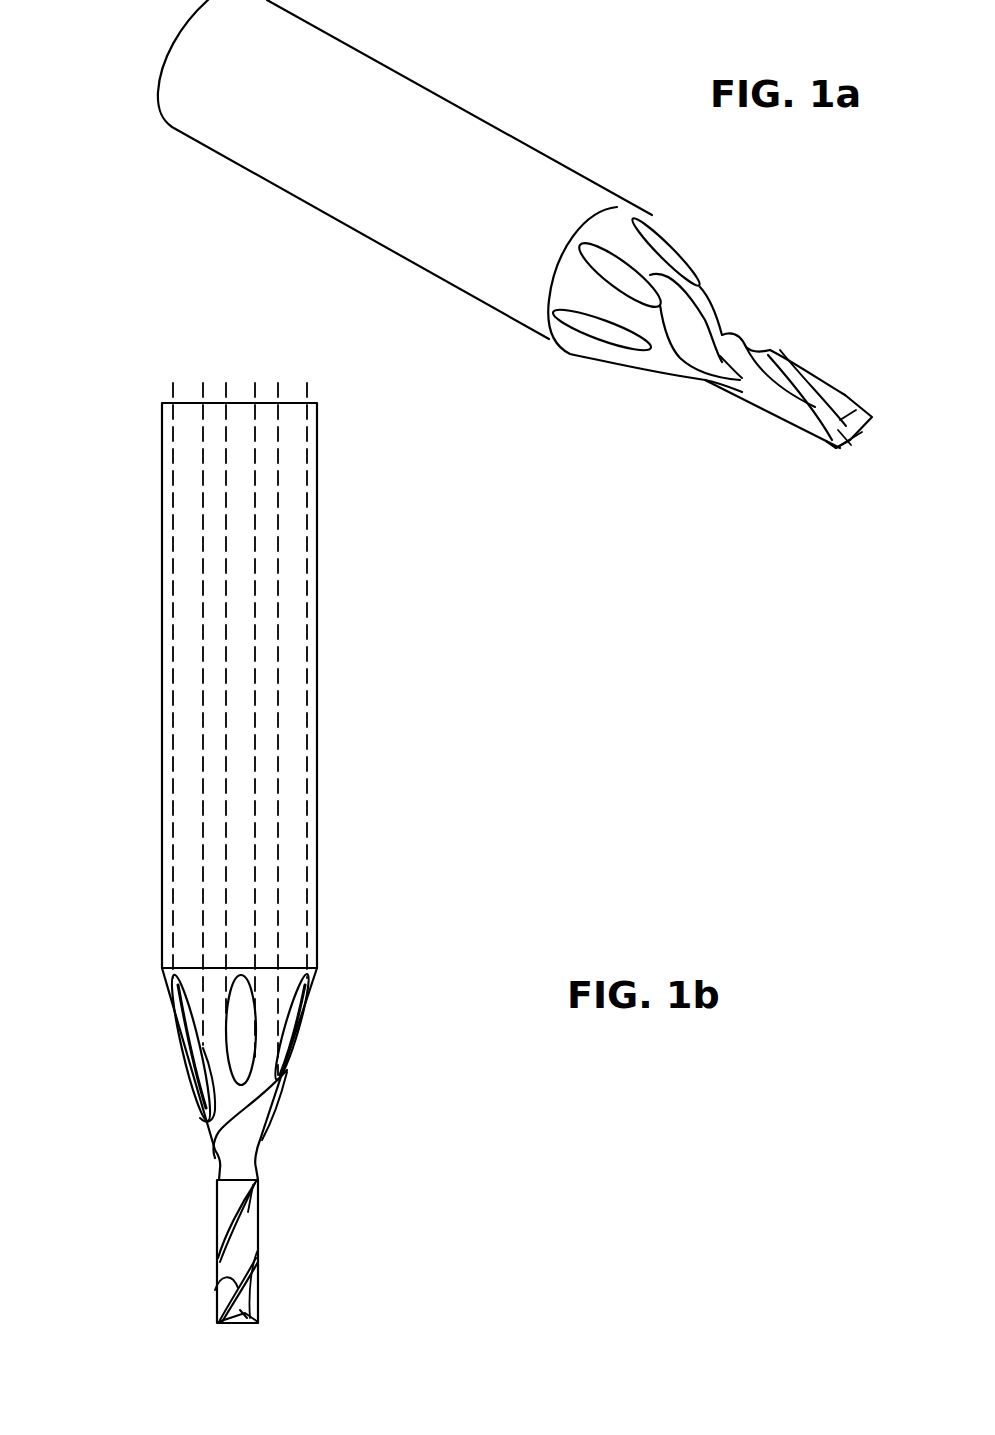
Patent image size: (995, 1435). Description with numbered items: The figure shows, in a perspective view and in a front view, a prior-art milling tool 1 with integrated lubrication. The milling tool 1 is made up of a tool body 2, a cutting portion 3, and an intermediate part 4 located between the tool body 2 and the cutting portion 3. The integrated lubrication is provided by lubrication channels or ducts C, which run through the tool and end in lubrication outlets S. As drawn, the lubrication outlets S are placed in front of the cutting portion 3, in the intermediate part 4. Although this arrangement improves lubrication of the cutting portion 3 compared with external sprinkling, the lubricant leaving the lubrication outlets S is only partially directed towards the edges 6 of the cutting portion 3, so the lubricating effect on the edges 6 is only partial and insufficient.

In FIG. 1A, the milling tool 1 is at (537, 70).
In FIG. 1B, the milling tool 1 is at (120, 642).
In FIG. 1A, the tool body 2 is at (418, 83).
In FIG. 1B, the tool body 2 is at (392, 403).
In FIG. 1A, the cutting portion 3 is at (762, 424).
In FIG. 1B, the cutting portion 3 is at (320, 1180).
In FIG. 1A, the intermediate part 4 is at (650, 338).
In FIG. 1B, the intermediate part 4 is at (353, 975).
In FIG. 1A, the edges 6 is at (850, 394).
In FIG. 1B, the edges 6 is at (221, 1276).
In FIG. 1A, the lubrication outlets S is at (665, 250).
In FIG. 1B, the lubrication outlets S is at (240, 1027).
In FIG. 1B, the lubrication channels c is at (240, 722).